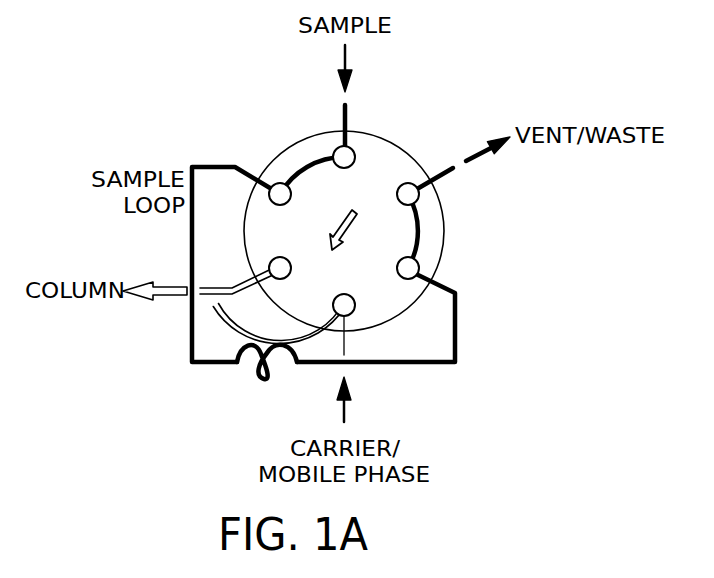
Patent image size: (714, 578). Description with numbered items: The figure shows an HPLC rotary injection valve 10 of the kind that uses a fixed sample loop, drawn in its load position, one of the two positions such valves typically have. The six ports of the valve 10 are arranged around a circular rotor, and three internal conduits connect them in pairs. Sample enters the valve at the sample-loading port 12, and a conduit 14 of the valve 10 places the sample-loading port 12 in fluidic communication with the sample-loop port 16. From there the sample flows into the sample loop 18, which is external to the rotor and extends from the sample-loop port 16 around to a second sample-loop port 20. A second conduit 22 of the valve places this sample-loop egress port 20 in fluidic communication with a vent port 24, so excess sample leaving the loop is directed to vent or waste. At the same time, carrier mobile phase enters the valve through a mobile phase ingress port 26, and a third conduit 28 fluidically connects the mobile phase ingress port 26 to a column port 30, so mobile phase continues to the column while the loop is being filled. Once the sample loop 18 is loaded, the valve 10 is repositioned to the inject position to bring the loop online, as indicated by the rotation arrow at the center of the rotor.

The rotary valve 10 is at (156, 40).
The sample-loading port 12 is at (336, 147).
The conduit 14 is at (303, 163).
The sample-loop port 16 is at (270, 182).
The sample loop 18 is at (202, 166).
The second sample-loop port 20 is at (417, 260).
The second conduit 22 is at (417, 217).
The vent port 24 is at (400, 184).
The mobile phase ingress port 26 is at (355, 302).
The third conduit 28 is at (302, 295).
The column port 30 is at (268, 259).